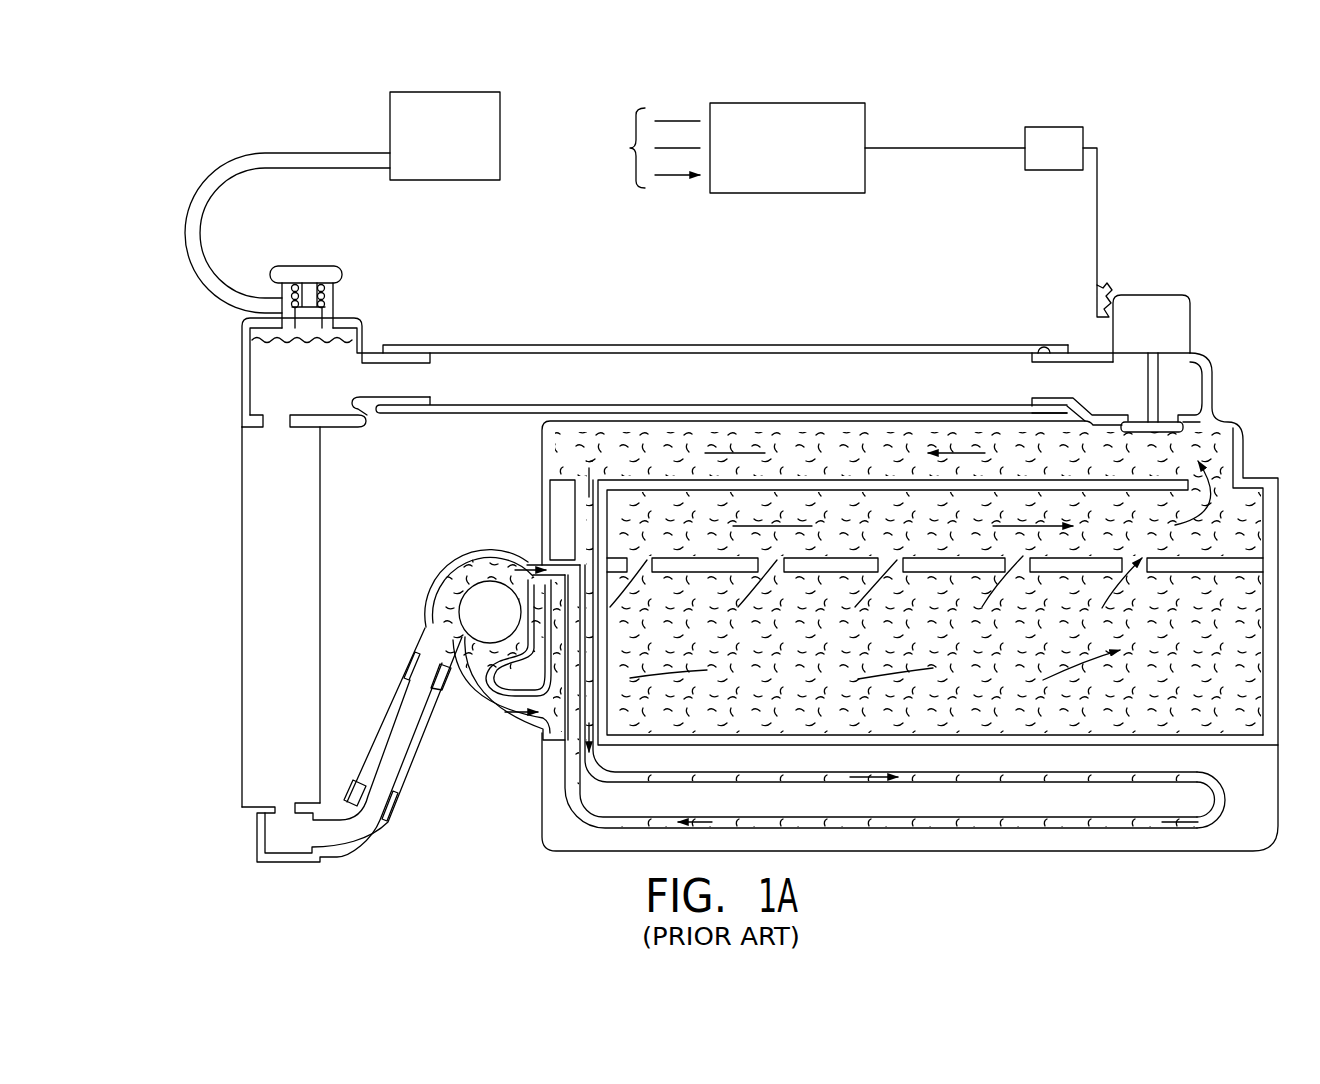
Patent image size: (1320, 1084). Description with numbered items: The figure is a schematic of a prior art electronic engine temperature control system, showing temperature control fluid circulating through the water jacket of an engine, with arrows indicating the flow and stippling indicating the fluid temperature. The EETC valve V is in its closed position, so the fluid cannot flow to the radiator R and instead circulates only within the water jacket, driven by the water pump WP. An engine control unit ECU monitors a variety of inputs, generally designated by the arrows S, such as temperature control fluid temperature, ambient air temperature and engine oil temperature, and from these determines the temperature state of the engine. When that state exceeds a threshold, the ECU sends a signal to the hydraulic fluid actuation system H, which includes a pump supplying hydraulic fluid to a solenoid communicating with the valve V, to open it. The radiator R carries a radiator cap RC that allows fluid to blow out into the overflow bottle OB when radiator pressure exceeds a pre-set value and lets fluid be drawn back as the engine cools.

The engine control unit ECU is at (845, 132).
The signals S is at (630, 148).
The hydraulic fluid actuation system H is at (1127, 162).
The EETC valve V is at (1180, 320).
The overflow bottle OB is at (465, 180).
The radiator cap RC is at (318, 272).
The radiator R is at (267, 628).
The water pump WP is at (502, 645).